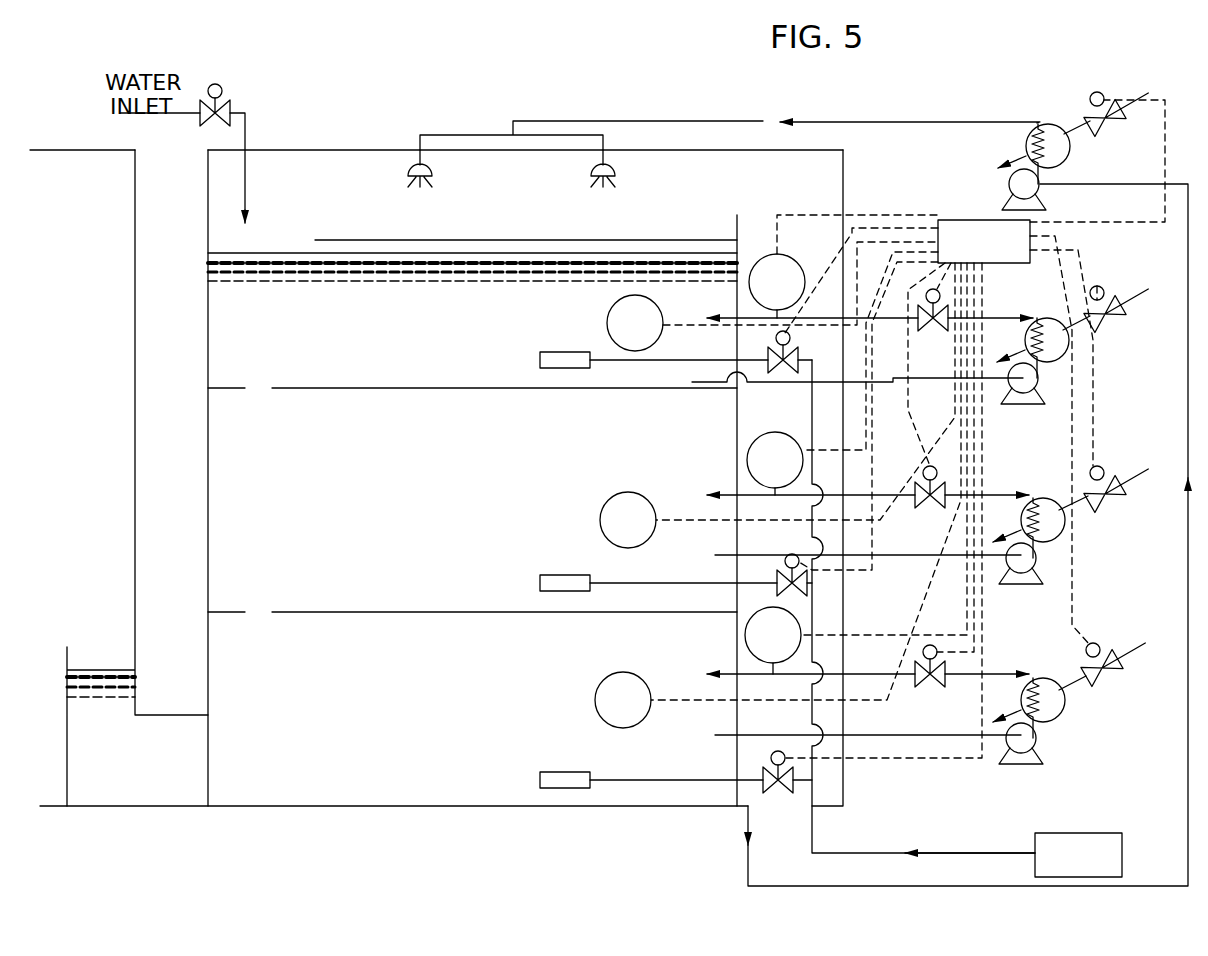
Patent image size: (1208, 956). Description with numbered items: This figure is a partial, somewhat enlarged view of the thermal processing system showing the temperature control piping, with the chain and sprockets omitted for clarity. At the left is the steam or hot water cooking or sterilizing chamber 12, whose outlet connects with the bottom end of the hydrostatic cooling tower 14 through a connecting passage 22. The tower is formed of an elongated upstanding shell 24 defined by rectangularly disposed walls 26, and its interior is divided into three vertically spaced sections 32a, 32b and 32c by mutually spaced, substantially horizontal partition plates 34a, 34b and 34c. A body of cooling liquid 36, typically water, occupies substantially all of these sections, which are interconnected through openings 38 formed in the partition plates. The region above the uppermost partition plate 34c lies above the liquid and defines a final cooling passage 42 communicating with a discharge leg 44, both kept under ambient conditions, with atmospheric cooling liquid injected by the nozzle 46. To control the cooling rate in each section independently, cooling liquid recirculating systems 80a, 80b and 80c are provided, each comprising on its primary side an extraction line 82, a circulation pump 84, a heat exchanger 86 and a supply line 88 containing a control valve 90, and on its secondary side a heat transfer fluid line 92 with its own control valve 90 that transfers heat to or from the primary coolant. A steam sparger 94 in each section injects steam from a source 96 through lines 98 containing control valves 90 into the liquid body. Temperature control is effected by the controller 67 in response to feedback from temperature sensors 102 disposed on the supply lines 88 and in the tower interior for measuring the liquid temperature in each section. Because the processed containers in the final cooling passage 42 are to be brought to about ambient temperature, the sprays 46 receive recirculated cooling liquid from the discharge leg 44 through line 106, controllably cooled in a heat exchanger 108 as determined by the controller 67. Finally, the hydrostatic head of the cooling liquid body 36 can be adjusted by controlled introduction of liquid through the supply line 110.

The cooking or sterilizing chamber 12 is at (50, 147).
The hydrostatic cooling tower 14 is at (340, 150).
The connecting passage 22 is at (160, 713).
The shell 24 is at (207, 372).
The walls 26 is at (845, 170).
The section 32a is at (399, 707).
The section 32b is at (452, 517).
The section 32c is at (440, 338).
The partition plate 34a is at (428, 614).
The partition plate 34b is at (432, 392).
The partition plate 34c is at (420, 240).
The body of cooling liquid 36 is at (262, 252).
The openings 38 is at (258, 392).
The final cooling passage 42 is at (393, 165).
The discharge leg 44 is at (757, 405).
The nozzle 46 is at (430, 168).
The controller 67 is at (940, 222).
The cooling liquid recirculating system 80a is at (1084, 717).
The cooling liquid recirculating system 80b is at (1050, 542).
The cooling liquid recirculating system 80c is at (1062, 365).
The extraction line 82 is at (915, 735).
The circulation pump 84 is at (1028, 757).
The heat exchanger 86 is at (1065, 705).
The supply line 88 is at (972, 680).
The control valve 90 is at (780, 375).
The heat transfer fluid line 92 is at (1130, 660).
The steam sparger 94 is at (570, 352).
The source 96 is at (1102, 833).
The lines 98 is at (643, 362).
The temperature sensors 102 is at (615, 303).
The line 106 is at (1135, 886).
The heat exchanger 108 is at (1045, 125).
The supply line 110 is at (245, 113).